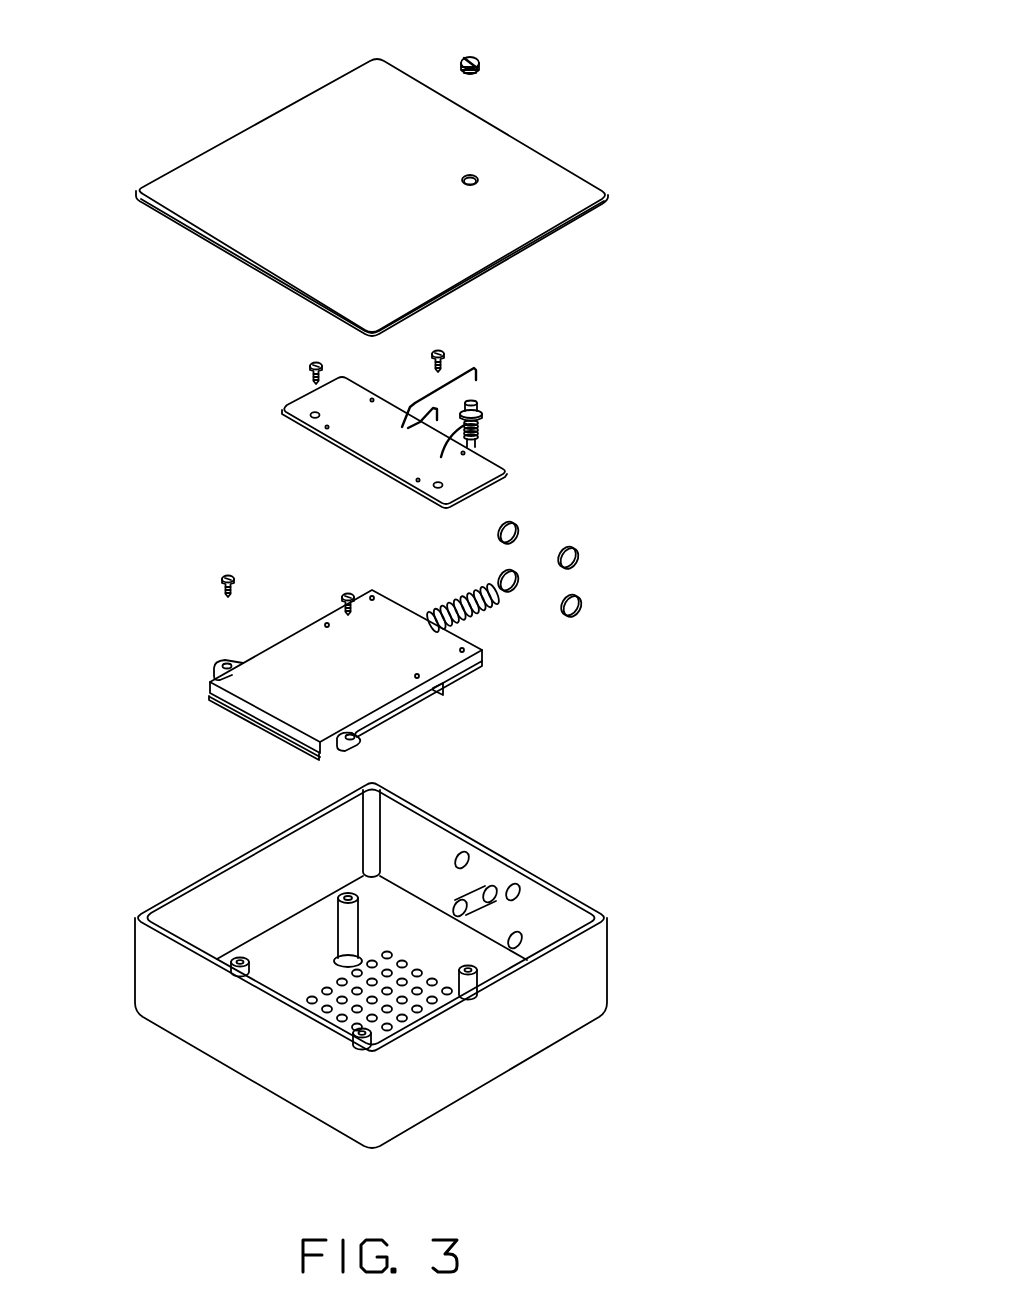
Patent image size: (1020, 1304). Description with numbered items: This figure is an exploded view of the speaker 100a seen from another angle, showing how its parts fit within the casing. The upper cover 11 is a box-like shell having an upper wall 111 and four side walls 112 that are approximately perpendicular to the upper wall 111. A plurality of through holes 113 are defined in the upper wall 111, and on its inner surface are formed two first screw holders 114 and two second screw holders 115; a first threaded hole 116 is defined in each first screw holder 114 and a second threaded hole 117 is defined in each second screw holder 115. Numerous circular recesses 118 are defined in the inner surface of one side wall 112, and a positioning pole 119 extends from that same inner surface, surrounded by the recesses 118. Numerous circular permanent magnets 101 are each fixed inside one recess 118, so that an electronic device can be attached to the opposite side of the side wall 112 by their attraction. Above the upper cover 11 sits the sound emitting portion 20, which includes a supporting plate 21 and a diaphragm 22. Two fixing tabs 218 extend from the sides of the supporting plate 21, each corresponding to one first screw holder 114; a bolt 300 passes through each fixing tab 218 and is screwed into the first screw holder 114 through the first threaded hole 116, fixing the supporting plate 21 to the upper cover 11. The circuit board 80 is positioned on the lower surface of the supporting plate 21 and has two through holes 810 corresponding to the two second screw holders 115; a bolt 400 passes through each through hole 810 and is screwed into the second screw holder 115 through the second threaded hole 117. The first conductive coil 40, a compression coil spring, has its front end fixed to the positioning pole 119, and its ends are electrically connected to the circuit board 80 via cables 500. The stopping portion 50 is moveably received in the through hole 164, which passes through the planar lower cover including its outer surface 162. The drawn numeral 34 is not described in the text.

The speaker 100a is at (615, 146).
The outer surface 162 is at (394, 86).
The through hole 164 is at (474, 175).
The screw 34 is at (478, 59).
The bolt 400 is at (311, 362).
The cables 500 is at (472, 370).
The circuit board 80 is at (350, 453).
The through holes 810 is at (311, 414).
The stopping portion 50 is at (483, 414).
The bolt 300 is at (225, 575).
The first conductive coil 40 is at (450, 603).
The permanent magnets 101 is at (572, 552).
The sound emitting portion 20 is at (358, 690).
The supporting plate 21 is at (447, 657).
The diaphragm 22 is at (393, 715).
The fixing tabs 218 is at (226, 662).
The upper cover 11 is at (407, 973).
The side walls 112 is at (567, 888).
The upper wall 111 is at (300, 985).
The through holes 113 is at (337, 1010).
The first screw holders 114 is at (227, 965).
The second screw holders 115 is at (345, 912).
The first threaded hole 116 is at (238, 957).
The second threaded hole 117 is at (345, 884).
The circular recesses 118 is at (465, 851).
The positioning pole 119 is at (484, 896).